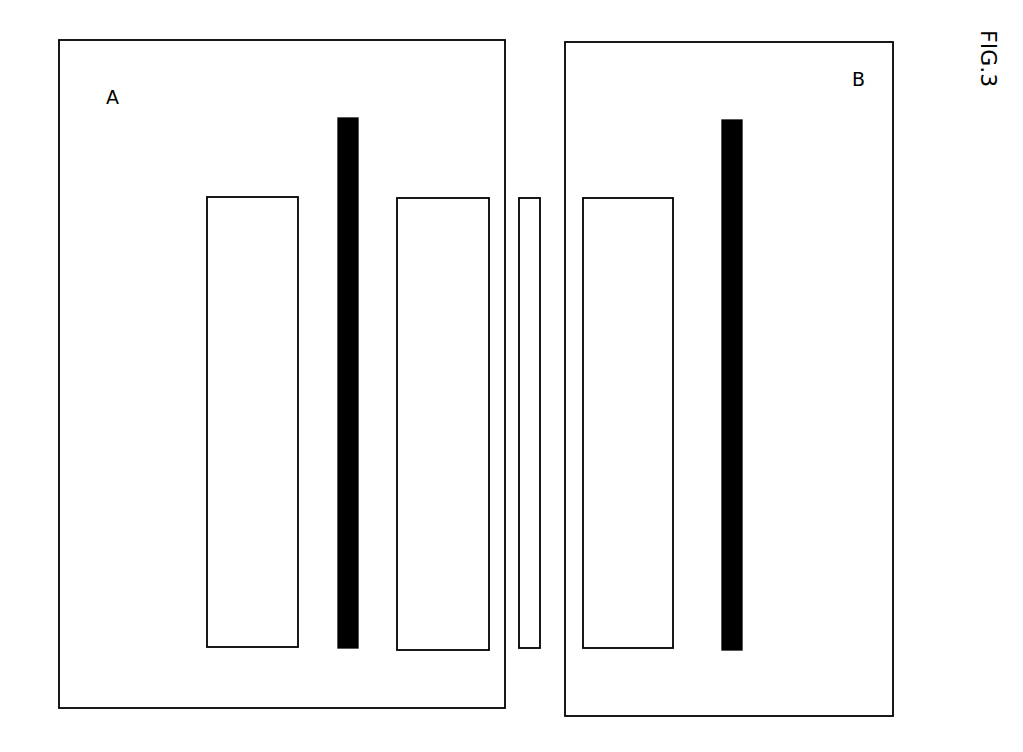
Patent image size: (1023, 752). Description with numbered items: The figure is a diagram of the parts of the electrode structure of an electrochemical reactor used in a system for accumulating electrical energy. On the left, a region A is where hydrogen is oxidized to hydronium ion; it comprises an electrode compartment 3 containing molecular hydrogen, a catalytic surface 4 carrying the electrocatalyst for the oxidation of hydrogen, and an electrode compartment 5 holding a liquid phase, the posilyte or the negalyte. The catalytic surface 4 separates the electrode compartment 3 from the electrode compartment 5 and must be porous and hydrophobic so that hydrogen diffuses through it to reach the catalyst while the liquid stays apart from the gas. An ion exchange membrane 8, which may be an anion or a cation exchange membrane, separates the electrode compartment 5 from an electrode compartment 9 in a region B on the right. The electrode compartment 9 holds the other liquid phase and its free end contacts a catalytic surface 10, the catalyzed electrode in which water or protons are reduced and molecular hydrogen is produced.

The electrode compartment 3 is at (207, 413).
The catalytic surface 4 is at (352, 648).
The electrode compartment 5 is at (439, 198).
The ion exchange membrane 8 is at (529, 375).
The electrode compartment 9 is at (613, 198).
The catalytic surface 10 is at (742, 400).